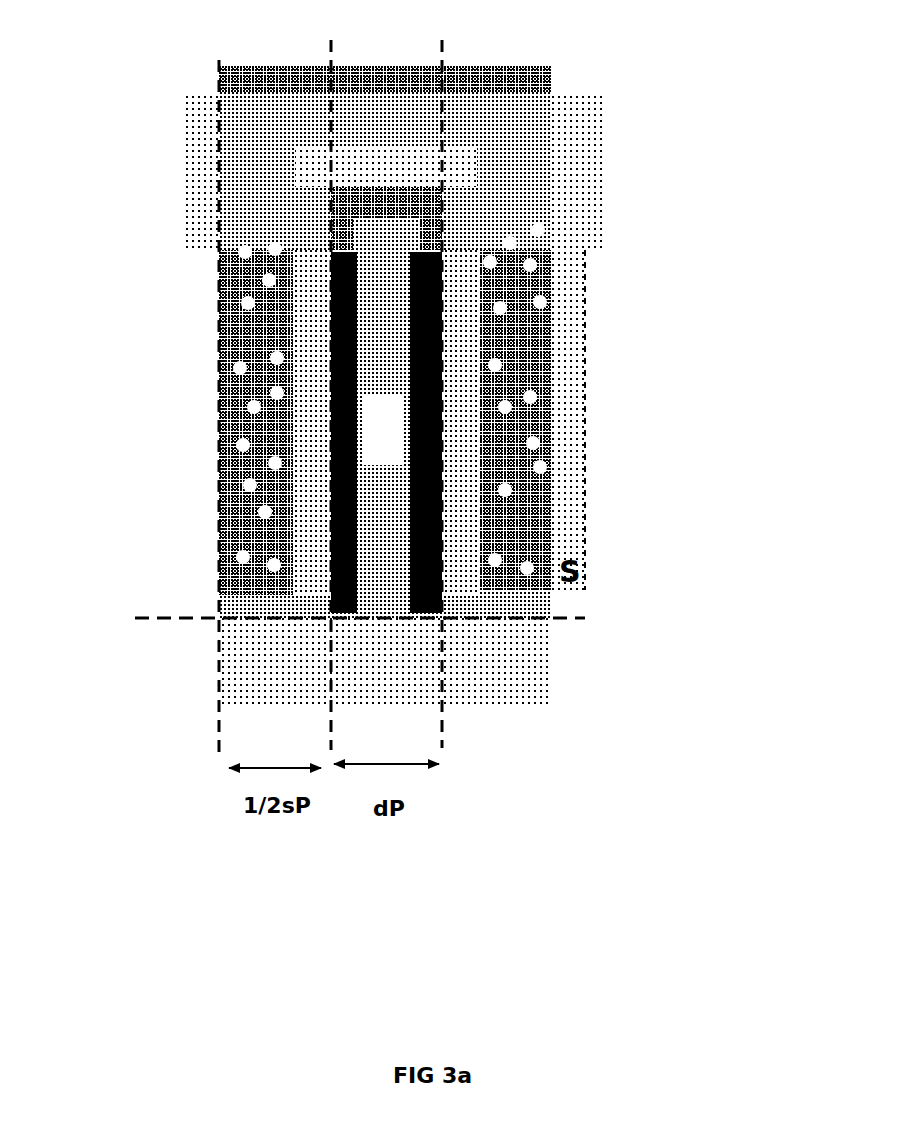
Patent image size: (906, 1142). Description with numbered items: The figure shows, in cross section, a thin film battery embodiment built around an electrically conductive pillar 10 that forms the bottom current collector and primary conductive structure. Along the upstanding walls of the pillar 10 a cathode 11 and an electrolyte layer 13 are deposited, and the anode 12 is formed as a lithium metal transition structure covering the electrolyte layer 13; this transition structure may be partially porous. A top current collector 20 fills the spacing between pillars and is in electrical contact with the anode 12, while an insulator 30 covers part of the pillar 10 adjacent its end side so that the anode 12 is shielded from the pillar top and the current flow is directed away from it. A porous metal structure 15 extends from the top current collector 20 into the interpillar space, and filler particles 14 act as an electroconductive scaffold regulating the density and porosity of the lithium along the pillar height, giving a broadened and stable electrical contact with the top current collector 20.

The pillar 10 is at (390, 400).
The cathode 11 is at (410, 573).
The anode 12 is at (508, 418).
The electrolyte layer 13 is at (465, 383).
The filler particles 14 is at (237, 447).
The porous metal structure 15 is at (185, 147).
The top current collector 20 is at (273, 103).
The insulator 30 is at (475, 142).